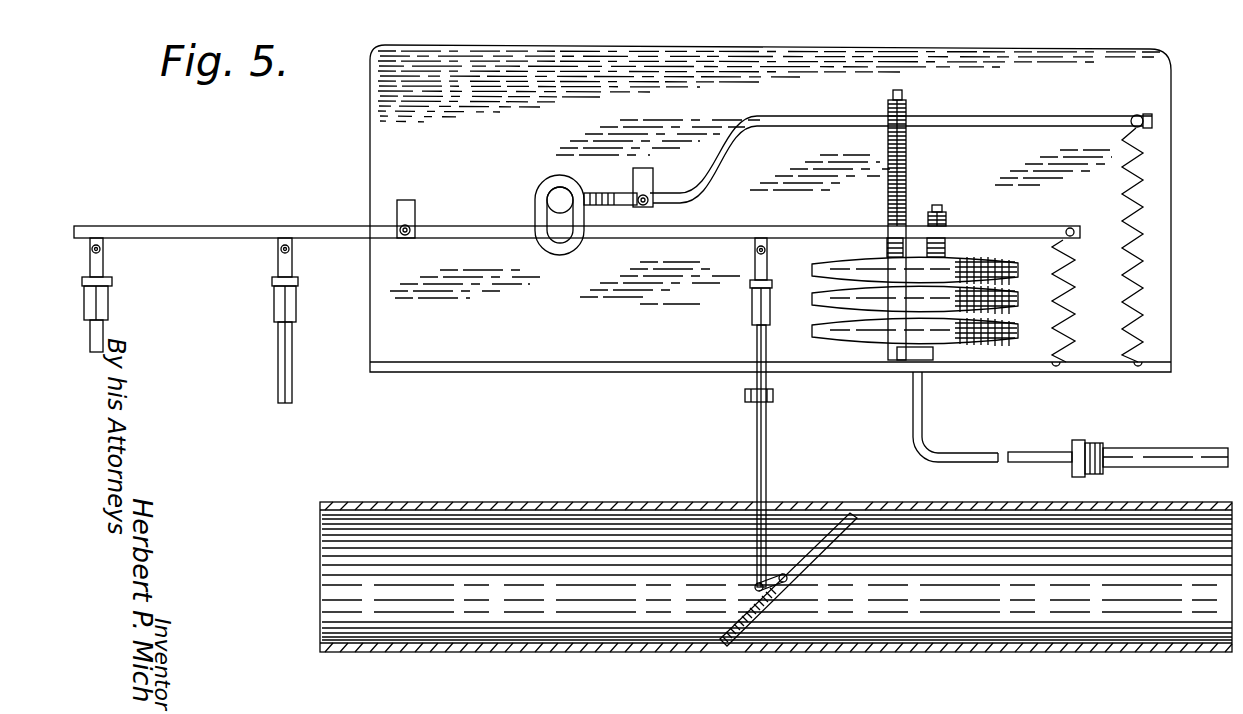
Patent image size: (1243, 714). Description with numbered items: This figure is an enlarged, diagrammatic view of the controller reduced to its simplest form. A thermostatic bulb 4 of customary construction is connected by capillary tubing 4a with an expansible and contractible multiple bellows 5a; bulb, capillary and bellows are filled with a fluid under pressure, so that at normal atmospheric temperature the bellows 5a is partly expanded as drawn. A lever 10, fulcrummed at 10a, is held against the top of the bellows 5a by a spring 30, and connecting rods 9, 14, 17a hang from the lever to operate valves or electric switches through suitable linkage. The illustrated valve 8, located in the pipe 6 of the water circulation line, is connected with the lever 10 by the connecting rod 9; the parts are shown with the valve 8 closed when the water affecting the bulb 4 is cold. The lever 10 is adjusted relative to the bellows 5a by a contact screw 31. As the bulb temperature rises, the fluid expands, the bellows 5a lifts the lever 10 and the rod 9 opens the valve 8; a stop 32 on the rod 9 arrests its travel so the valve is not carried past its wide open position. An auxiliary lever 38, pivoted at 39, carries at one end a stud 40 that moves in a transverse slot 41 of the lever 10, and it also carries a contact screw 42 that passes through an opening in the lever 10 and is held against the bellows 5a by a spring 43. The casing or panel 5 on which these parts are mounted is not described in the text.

The thermostatic bulb 4 is at (1155, 455).
The capillary tubing 4a is at (923, 418).
The casing / panel 5 is at (682, 350).
The multiple bellows 5a is at (812, 272).
The pipe 6 is at (833, 652).
The valve 8 is at (766, 600).
The connecting rod 9 is at (768, 453).
The lever 10 is at (333, 235).
The fulcrum 10a is at (420, 226).
The connecting rod 14 is at (292, 372).
The connecting rod 17a is at (104, 332).
The spring 30 is at (1078, 272).
The contact screw 31 is at (947, 218).
The stop 32 is at (744, 395).
The auxiliary lever 38 is at (793, 128).
The pivot 39 is at (655, 205).
The stud 40 is at (547, 200).
The transverse slot 41 is at (568, 236).
The contact screw 42 is at (907, 160).
The spring 43 is at (1150, 193).